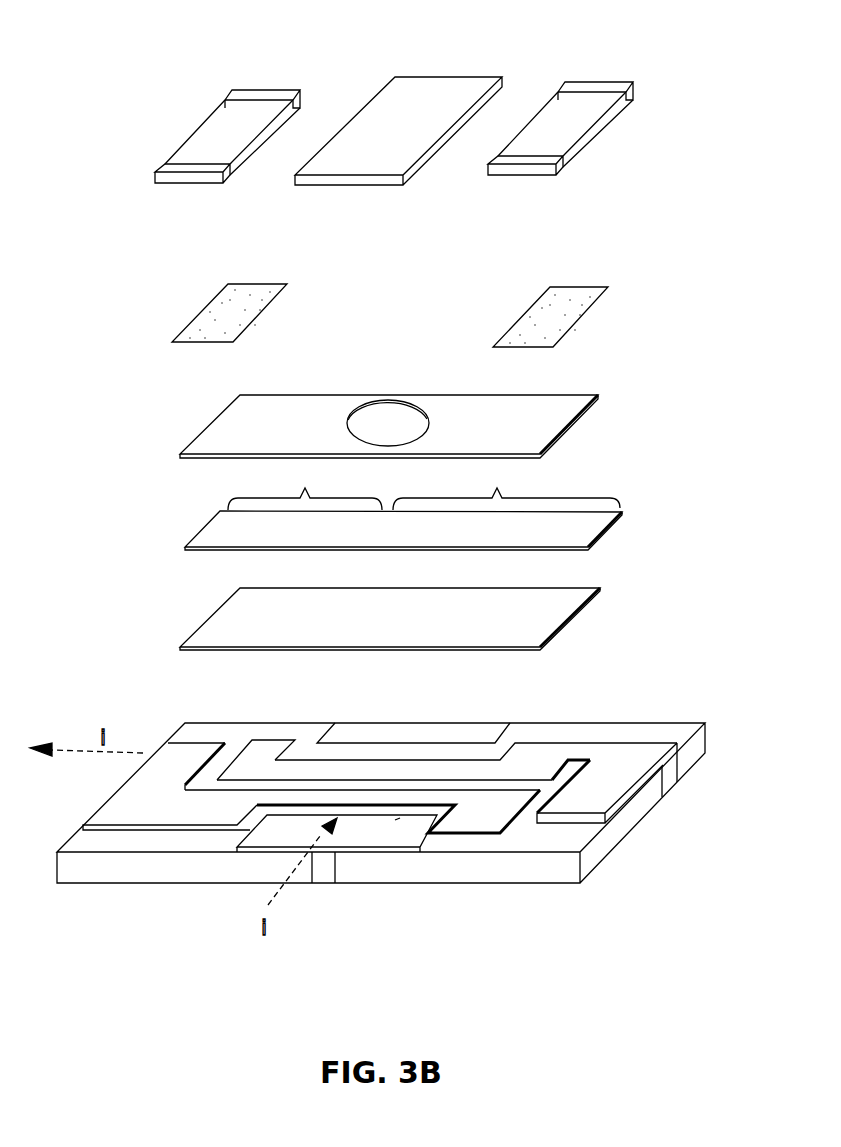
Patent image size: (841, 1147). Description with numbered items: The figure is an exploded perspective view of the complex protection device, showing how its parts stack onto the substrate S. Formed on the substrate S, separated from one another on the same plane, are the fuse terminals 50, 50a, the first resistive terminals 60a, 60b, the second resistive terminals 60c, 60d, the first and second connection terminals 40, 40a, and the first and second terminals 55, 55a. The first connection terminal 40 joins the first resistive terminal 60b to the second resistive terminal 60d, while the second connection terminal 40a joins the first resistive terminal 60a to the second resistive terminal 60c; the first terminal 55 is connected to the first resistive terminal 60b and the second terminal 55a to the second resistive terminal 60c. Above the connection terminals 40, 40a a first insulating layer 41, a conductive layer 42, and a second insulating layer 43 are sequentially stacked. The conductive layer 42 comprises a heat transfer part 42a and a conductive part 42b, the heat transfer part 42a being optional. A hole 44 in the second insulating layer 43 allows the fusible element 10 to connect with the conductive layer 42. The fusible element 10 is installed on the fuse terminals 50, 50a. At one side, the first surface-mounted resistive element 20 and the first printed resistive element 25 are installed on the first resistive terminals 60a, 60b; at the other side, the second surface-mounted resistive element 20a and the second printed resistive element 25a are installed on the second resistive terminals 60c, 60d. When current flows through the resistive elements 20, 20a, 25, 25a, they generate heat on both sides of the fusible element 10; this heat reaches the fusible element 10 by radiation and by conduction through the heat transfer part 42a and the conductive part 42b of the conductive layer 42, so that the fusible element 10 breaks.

The fusible element 10 is at (423, 92).
The first surface-mounted resistive element 20 is at (563, 122).
The second surface-mounted resistive element 20a is at (227, 125).
The first printed resistive element 25 is at (575, 308).
The second printed resistive element 25a is at (228, 305).
The first connection terminal 40 is at (380, 762).
The second connection terminal 40a is at (395, 820).
The first insulating layer 41 is at (548, 608).
The conductive layer 42 is at (431, 518).
The heat transfer part 42a is at (305, 485).
The conductive part 42b is at (506, 485).
The second insulating layer 43 is at (422, 416).
The hole 44 is at (412, 420).
The fuse terminal 50 is at (340, 845).
The fuse terminal 50a is at (468, 740).
The first terminal 55 is at (630, 770).
The second terminal 55a is at (140, 775).
The first resistive terminal 60a is at (440, 840).
The first resistive terminal 60b is at (582, 752).
The second resistive terminal 60c is at (210, 855).
The second resistive terminal 60d is at (285, 745).
The substrate S is at (600, 850).